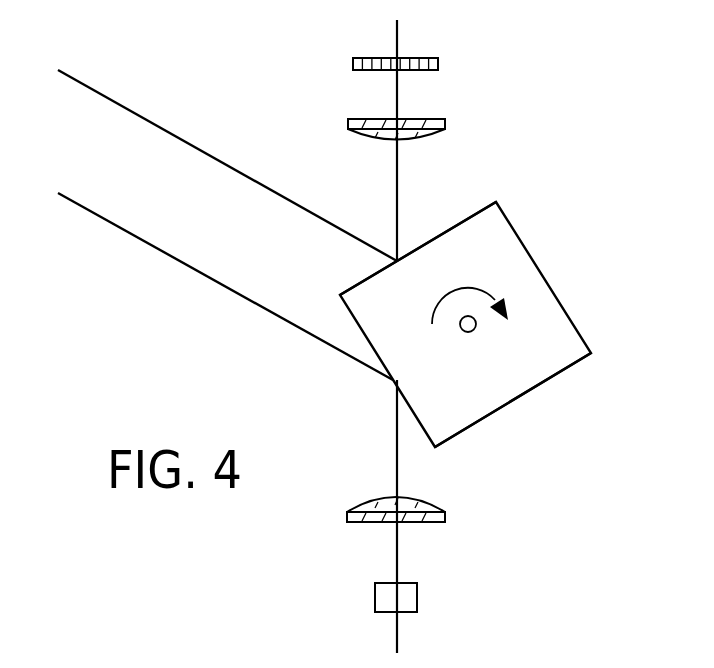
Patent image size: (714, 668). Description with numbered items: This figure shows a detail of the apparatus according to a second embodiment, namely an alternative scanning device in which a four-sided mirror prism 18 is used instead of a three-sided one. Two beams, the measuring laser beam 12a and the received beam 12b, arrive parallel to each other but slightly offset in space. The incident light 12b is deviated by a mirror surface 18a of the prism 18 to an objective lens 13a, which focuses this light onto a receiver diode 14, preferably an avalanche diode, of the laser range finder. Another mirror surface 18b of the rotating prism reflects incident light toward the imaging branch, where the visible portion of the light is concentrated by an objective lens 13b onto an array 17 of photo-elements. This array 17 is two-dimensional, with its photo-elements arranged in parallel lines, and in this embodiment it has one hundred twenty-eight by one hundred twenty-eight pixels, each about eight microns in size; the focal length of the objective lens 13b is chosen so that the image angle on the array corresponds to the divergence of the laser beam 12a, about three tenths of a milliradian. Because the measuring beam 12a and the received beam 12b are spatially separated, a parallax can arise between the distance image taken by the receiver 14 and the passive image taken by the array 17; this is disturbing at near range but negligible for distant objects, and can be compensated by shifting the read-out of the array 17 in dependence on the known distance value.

The laser beam 12a is at (192, 135).
The received beam 12b is at (131, 249).
The array of photo-elements 17 is at (438, 63).
The objective lens 13b is at (445, 123).
The four-sided mirror prism 18 is at (513, 247).
The mirror surface 18b is at (491, 230).
The mirror surface 18a is at (529, 413).
The objective lens 13a is at (445, 517).
The receiver diode 14 is at (417, 598).